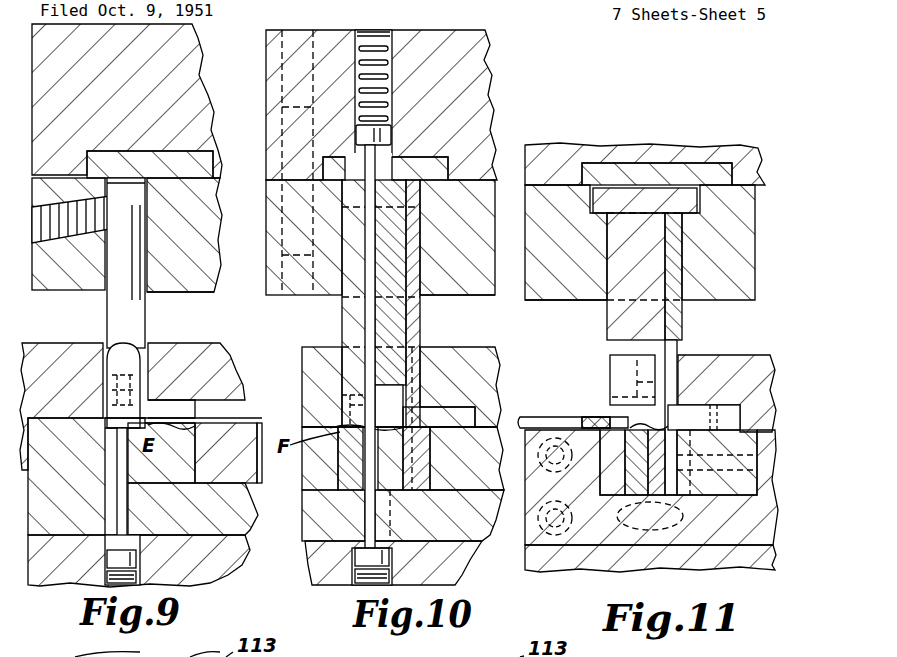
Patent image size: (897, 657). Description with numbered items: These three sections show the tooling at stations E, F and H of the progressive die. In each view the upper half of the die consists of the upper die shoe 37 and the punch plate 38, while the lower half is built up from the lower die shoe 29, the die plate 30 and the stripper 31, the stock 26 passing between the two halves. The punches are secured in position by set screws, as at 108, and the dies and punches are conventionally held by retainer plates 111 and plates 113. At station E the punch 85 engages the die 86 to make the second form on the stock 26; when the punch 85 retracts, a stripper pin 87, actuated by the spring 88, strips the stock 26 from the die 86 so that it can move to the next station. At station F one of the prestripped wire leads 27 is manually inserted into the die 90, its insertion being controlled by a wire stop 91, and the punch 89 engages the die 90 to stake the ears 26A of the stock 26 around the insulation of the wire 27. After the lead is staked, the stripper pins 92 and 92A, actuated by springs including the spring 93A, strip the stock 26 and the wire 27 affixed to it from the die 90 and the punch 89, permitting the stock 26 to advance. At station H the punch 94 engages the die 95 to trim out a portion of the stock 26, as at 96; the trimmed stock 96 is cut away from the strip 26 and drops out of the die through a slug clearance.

In FIG. 9, the upper die shoe 37 is at (188, 55).
In FIG. 10, the upper die shoe 37 is at (483, 58).
In FIG. 11, the upper die shoe 37 is at (560, 147).
In FIG. 9, the plate 113 is at (197, 168).
In FIG. 10, the plate 113 is at (430, 157).
In FIG. 11, the plate 113 is at (647, 163).
In FIG. 9, the retainer plate 111 is at (210, 218).
In FIG. 10, the retainer plate 111 is at (257, 255).
In FIG. 11, the retainer plate 111 is at (793, 235).
In FIG. 9, the set screw 108 is at (38, 242).
In FIG. 9, the punch plate 38 is at (212, 292).
In FIG. 10, the punch plate 38 is at (470, 293).
In FIG. 11, the punch plate 38 is at (538, 300).
In FIG. 9, the punch 85 is at (128, 360).
In FIG. 9, the stripper 31 is at (222, 350).
In FIG. 10, the stripper 31 is at (316, 346).
In FIG. 11, the stripper 31 is at (743, 362).
In FIG. 9, the die 86 is at (107, 428).
In FIG. 9, the stripper pin 87 is at (117, 503).
In FIG. 9, the die plate 30 is at (233, 522).
In FIG. 10, the die plate 30 is at (465, 535).
In FIG. 11, the die plate 30 is at (767, 518).
In FIG. 9, the lower die shoe 29 is at (222, 562).
In FIG. 10, the lower die shoe 29 is at (457, 572).
In FIG. 11, the lower die shoe 29 is at (565, 570).
In FIG. 9, the spring 88 is at (90, 588).
In FIG. 10, the spring 93A is at (372, 103).
In FIG. 10, the stripper pin 92A is at (373, 255).
In FIG. 10, the punch 89 is at (388, 358).
In FIG. 10, the ears 26A is at (362, 400).
In FIG. 10, the stock 26 is at (410, 427).
In FIG. 10, the wire stop 91 is at (413, 425).
In FIG. 10, the die 90 is at (337, 452).
In FIG. 10, the stripper pin 92 is at (372, 500).
In FIG. 11, the punch 94 is at (672, 340).
In FIG. 11, the wire lead 27 is at (576, 417).
In FIG. 11, the trimmed stock 96 is at (705, 418).
In FIG. 11, the die 95 is at (685, 447).